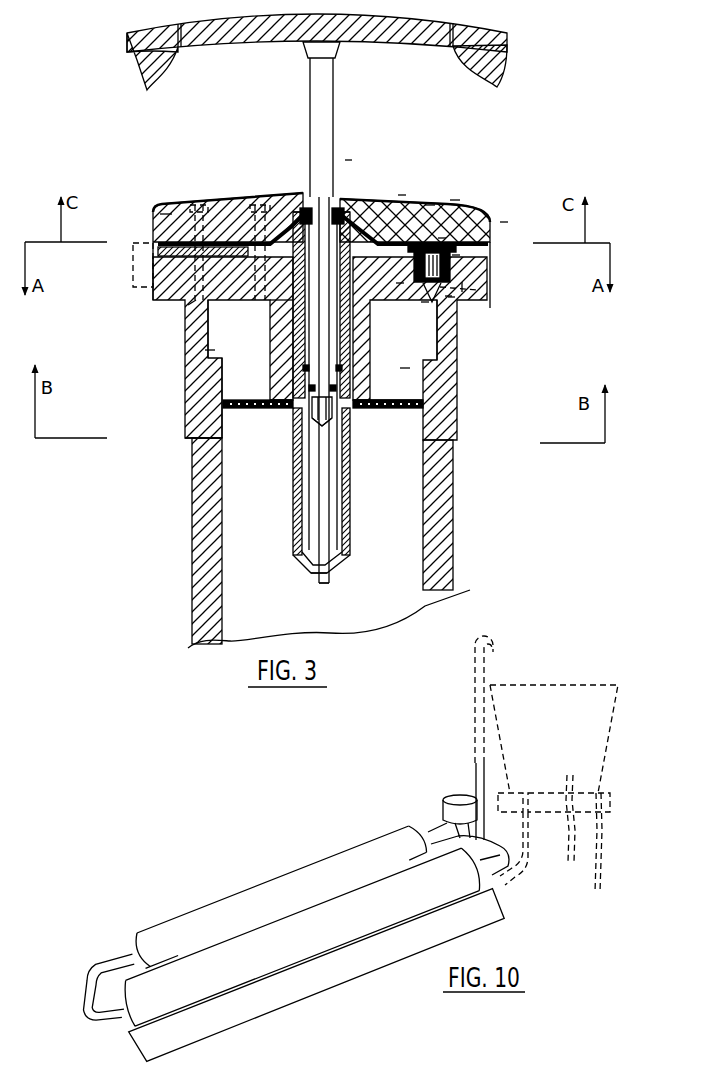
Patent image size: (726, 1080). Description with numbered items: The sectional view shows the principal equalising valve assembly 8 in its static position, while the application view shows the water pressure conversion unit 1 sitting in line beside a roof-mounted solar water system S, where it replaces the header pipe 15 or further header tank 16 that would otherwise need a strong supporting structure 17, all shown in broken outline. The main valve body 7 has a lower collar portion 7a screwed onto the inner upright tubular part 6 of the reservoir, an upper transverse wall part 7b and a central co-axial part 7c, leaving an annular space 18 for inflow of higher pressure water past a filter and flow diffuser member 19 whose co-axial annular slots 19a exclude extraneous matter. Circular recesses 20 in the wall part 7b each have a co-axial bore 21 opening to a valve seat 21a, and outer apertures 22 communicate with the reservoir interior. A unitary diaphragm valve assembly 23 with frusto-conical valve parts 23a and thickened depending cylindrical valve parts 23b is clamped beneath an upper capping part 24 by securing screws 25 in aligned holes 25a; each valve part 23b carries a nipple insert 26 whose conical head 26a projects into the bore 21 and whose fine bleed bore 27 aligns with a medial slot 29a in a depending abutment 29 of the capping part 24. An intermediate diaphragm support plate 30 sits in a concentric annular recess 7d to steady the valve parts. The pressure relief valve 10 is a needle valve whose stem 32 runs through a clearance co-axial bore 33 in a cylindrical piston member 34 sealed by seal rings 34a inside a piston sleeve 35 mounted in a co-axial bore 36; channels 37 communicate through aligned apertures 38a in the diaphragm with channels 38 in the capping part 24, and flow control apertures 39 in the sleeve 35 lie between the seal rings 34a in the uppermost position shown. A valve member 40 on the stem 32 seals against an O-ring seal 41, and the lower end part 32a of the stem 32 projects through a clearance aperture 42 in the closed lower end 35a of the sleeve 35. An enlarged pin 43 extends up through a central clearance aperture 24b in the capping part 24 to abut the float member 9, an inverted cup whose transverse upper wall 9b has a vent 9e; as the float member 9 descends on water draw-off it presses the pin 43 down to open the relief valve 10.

In FIG. 10, the water pressure conversion unit 1 is at (432, 803).
In FIG. 10, the solar water system S is at (237, 886).
In FIG. 3, the inner upright tubular part 6 is at (205, 585).
In FIG. 3, the main valve body 7 is at (163, 323).
In FIG. 3, the lower boss or collar portion 7a is at (190, 420).
In FIG. 3, the upper transverse wall part 7b is at (222, 329).
In FIG. 3, the central co-axial part 7c is at (222, 378).
In FIG. 3, the concentric annular recess 7d is at (405, 330).
In FIG. 3, the equalising valve assembly 8 is at (440, 200).
In FIG. 3, the float member 9 is at (508, 50).
In FIG. 3, the transverse upper wall 9b is at (443, 46).
In FIG. 3, the vent 9e is at (180, 56).
In FIG. 3, the pressure relief valve 10 is at (348, 157).
In FIG. 10, the header pipe 15 is at (473, 720).
In FIG. 10, the further header tank 16 is at (554, 785).
In FIG. 10, the supporting structure 17 is at (590, 852).
In FIG. 3, the annular space 18 is at (205, 350).
In FIG. 3, the filter and flow diffuser member 19 is at (448, 460).
In FIG. 3, the co-axial annular slots 19a is at (385, 410).
In FIG. 3, the circular recesses 20 is at (400, 283).
In FIG. 3, the co-axial bore 21 is at (448, 302).
In FIG. 3, the valve seats 21a is at (425, 302).
In FIG. 3, the outer apertures 22 is at (455, 292).
In FIG. 3, the unitary diaphragm valve assembly 23 is at (158, 243).
In FIG. 3, the frusto-conical valve parts 23a is at (455, 255).
In FIG. 3, the thickened depending cylindrical valve part 23b is at (458, 268).
In FIG. 3, the upper capping part 24 is at (430, 205).
In FIG. 3, the central clearance aperture 24b is at (346, 206).
In FIG. 3, the securing screws 25 is at (240, 205).
In FIG. 3, the aligned holes 25a is at (142, 291).
In FIG. 3, the nipple insert 26 is at (462, 286).
In FIG. 3, the depending co-axial conical head 26a is at (448, 296).
In FIG. 3, the fine co-axial bleed bore 27 is at (450, 297).
In FIG. 3, the co-axial depending abutment 29 is at (505, 222).
In FIG. 3, the medial transverse open-ended slot 29a is at (440, 238).
In FIG. 3, the intermediate diaphragm support plate 30 is at (188, 305).
In FIG. 3, the stem 32 is at (320, 350).
In FIG. 3, the lower end part 32a is at (340, 548).
In FIG. 3, the clearance co-axial bore 33 is at (340, 322).
In FIG. 3, the cylindrical piston member 34 is at (410, 332).
In FIG. 3, the seal rings 34a is at (296, 215).
In FIG. 3, the piston sleeve 35 is at (352, 505).
In FIG. 3, the closed lower end 35a is at (335, 566).
In FIG. 3, the co-axial bore 36 is at (272, 406).
In FIG. 3, the channels 37 is at (400, 368).
In FIG. 3, the channels 38 is at (455, 198).
In FIG. 3, the aligned apertures 38a is at (402, 188).
In FIG. 3, the flow control apertures 39 is at (160, 214).
In FIG. 3, the valve member 40 is at (296, 465).
In FIG. 3, the O-ring seal 41 is at (290, 404).
In FIG. 3, the clearance aperture 42 is at (330, 586).
In FIG. 3, the enlarged pin 43 is at (323, 92).